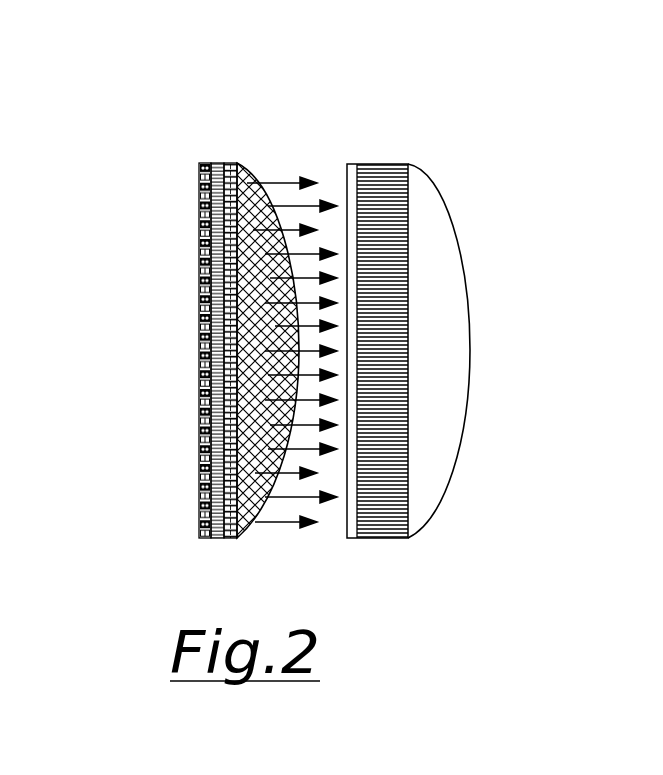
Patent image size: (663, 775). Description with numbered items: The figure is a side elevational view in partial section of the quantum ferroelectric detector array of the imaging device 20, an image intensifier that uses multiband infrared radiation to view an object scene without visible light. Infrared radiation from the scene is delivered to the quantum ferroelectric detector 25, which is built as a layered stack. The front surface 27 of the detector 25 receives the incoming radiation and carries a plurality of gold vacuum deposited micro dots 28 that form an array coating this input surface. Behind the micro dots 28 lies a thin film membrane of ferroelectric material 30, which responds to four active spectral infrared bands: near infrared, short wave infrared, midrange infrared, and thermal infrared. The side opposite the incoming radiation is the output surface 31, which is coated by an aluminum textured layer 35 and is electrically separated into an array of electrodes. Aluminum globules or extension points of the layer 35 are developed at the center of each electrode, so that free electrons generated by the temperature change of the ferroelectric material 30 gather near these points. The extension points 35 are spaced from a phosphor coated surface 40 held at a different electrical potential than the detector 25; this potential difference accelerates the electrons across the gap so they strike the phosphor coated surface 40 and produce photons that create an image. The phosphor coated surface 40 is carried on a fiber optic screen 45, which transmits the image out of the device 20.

The imaging device 20 is at (319, 56).
The quantum ferroelectric detector 25 is at (240, 152).
The front surface 27 is at (200, 532).
The gold micro dots 28 is at (199, 280).
The ferroelectric material 30 is at (213, 537).
The output surface 31 is at (215, 463).
The aluminum textured layer 35 is at (244, 178).
The phosphor coated surface 40 is at (347, 524).
The fiber optic screen 45 is at (450, 262).